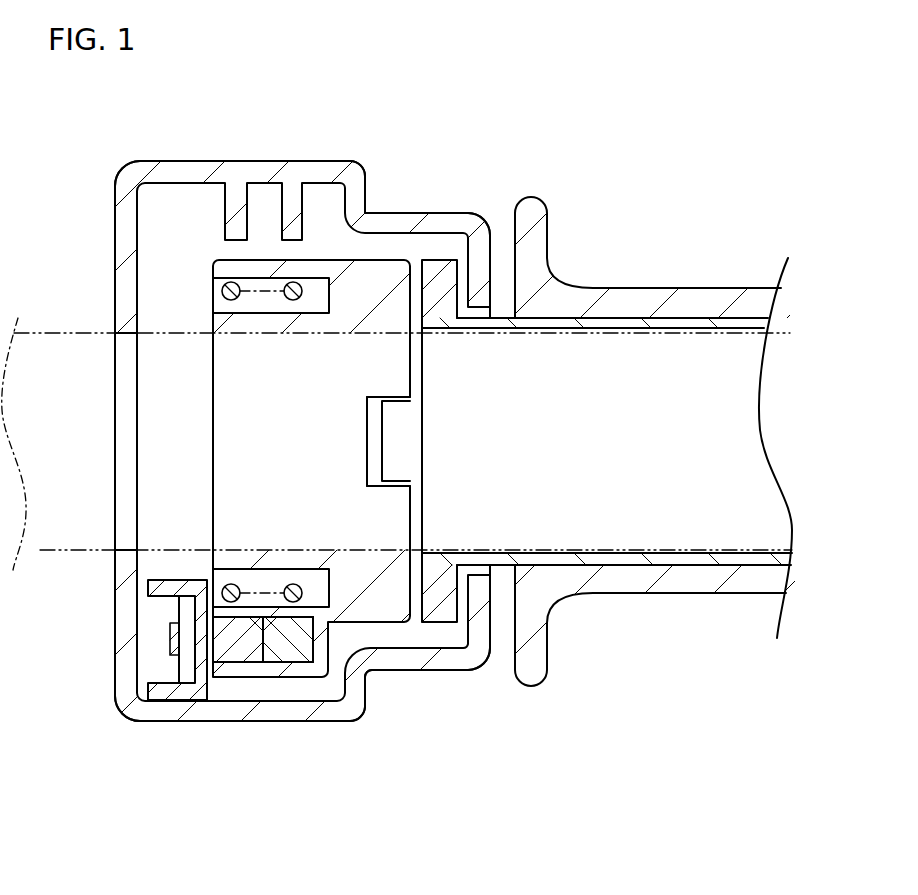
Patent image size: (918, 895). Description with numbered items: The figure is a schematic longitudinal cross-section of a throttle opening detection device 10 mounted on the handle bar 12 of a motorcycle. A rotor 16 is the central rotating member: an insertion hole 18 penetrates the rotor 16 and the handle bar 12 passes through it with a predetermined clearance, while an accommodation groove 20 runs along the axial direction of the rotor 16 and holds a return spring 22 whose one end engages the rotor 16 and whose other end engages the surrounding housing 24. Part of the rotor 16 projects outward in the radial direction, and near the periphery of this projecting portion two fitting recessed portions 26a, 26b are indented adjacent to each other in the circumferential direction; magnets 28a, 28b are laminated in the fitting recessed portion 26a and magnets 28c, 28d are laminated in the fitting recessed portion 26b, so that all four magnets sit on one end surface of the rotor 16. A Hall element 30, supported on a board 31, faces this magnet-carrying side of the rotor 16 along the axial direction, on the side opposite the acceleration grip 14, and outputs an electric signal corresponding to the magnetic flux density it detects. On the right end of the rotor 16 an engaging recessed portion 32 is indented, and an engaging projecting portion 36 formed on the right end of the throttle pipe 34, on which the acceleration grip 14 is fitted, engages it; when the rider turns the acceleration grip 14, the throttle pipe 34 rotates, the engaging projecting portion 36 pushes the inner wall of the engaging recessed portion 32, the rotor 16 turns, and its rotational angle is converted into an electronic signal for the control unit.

The throttle opening detection device 10 is at (452, 97).
The handle bar 12 is at (67, 530).
The acceleration grip 14 is at (645, 300).
The rotor 16 is at (380, 600).
The insertion hole 18 is at (236, 337).
The accommodation groove 20 is at (313, 300).
The return spring 22 is at (223, 293).
The housing 24 is at (197, 172).
The fitting recessed portion 26a is at (303, 645).
The fitting recessed portion 26b is at (327, 680).
The magnet 28a is at (232, 650).
The magnet 28b is at (300, 630).
The magnet 28c is at (234, 702).
The magnet 28d is at (302, 588).
The Hall element 30 is at (177, 638).
The board 31 is at (190, 668).
The engaging recessed portion 32 is at (367, 447).
The throttle pipe 34 is at (733, 383).
The engaging projecting portion 36 is at (402, 414).